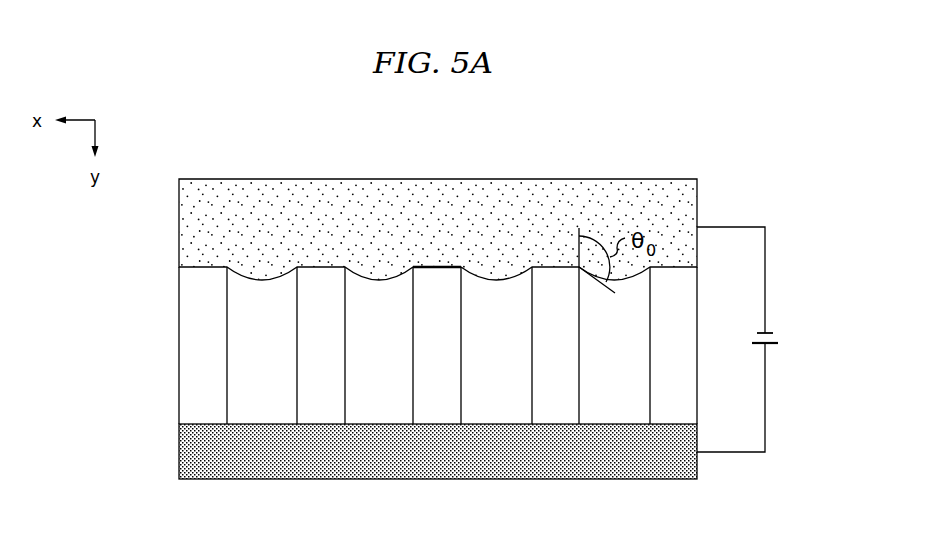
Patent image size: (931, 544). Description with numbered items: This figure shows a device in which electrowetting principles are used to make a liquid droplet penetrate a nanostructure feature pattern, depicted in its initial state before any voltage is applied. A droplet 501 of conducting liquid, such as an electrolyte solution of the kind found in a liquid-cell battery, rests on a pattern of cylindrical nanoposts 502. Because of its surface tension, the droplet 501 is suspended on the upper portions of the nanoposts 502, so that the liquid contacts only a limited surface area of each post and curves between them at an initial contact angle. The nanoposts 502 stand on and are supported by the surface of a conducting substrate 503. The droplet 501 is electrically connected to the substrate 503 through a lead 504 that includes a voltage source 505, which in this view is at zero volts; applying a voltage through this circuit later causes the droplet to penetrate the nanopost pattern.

The droplet 501 is at (699, 181).
The nanoposts 502 is at (218, 362).
The conducting substrate 503 is at (178, 460).
The lead 504 is at (766, 419).
The voltage source 505 is at (776, 343).